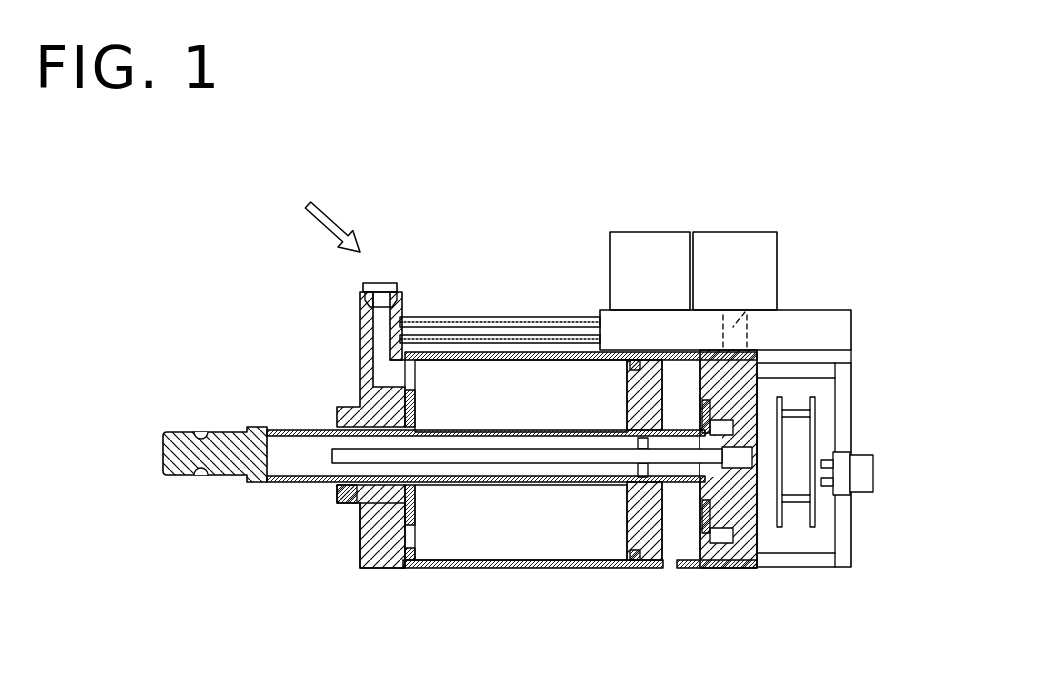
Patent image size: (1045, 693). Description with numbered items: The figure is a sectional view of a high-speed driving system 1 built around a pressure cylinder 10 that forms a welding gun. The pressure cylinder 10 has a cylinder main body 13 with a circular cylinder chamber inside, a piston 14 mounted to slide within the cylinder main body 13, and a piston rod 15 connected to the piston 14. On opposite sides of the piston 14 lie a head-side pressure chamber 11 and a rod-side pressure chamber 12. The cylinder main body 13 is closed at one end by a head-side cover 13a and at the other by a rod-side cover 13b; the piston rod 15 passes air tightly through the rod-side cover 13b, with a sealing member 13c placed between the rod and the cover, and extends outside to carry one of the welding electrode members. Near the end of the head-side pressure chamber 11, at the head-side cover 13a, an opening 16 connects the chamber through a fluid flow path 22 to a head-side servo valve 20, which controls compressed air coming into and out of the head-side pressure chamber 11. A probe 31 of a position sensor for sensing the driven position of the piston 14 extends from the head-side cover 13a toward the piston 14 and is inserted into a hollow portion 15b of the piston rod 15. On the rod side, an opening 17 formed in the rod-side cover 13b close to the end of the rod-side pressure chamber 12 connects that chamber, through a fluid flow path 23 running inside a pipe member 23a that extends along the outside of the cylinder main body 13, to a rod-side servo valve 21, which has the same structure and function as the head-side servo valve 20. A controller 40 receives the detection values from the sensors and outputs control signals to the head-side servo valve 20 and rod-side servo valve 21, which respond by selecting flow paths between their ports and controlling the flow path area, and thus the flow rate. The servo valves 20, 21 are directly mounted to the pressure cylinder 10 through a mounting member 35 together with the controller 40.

The high-speed driving system 1 is at (321, 219).
The pressure cylinder 10 is at (343, 395).
The head-side pressure chamber 11 is at (683, 543).
The rod-side pressure chamber 12 is at (462, 530).
The cylinder main body 13 is at (580, 512).
The head-side cover 13a is at (745, 438).
The rod-side cover 13b is at (358, 543).
The sealing member 13c is at (337, 498).
The piston 14 is at (653, 537).
The piston rod 15 is at (235, 475).
The hollow portion 15b is at (292, 450).
The opening 16 is at (757, 350).
The opening 17 is at (387, 380).
The head-side servo valve 20 is at (736, 238).
The rod-side servo valve 21 is at (648, 238).
The fluid flow path 22 is at (745, 312).
The fluid flow path 23 is at (435, 327).
The pipe member 23a is at (508, 317).
The probe 31 is at (682, 462).
The mounting member 35 is at (842, 338).
The controller 40 is at (812, 532).